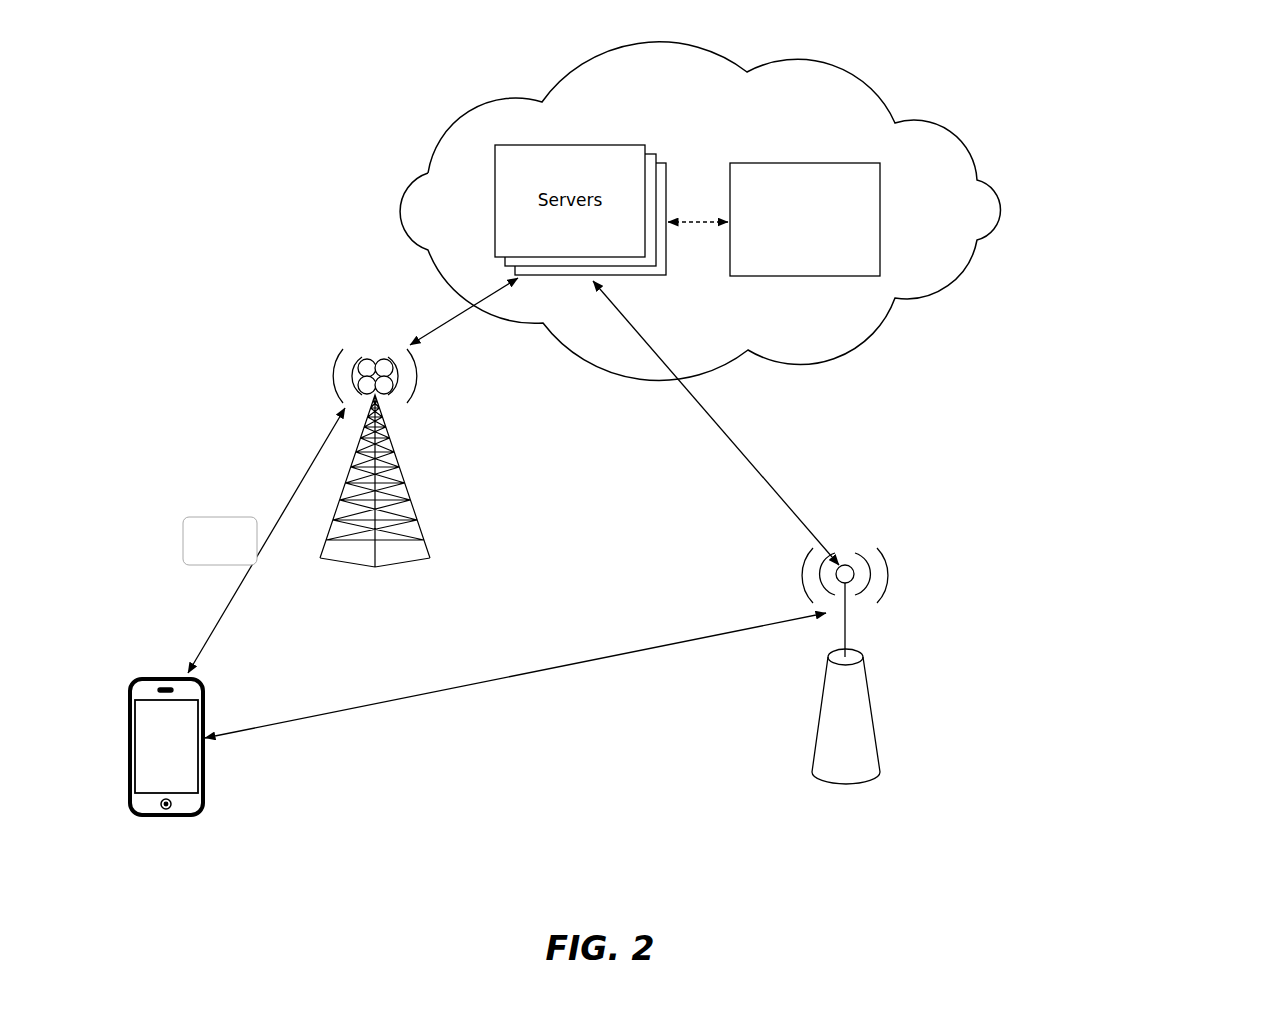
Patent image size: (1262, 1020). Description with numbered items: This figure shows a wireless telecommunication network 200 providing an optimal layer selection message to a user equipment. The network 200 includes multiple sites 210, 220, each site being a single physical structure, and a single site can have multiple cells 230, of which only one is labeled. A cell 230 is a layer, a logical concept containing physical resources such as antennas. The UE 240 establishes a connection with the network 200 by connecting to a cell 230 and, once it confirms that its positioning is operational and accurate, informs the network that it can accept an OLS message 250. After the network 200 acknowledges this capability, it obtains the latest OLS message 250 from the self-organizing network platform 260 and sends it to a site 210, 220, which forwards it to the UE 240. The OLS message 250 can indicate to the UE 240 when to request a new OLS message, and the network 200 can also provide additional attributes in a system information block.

The wireless telecommunication network 200 is at (1182, 103).
The site 210 is at (375, 515).
The site 220 is at (845, 695).
The cell 230 is at (381, 361).
The user equipment 240 is at (166, 782).
The OLS message 250 is at (220, 541).
The self-organizing network platform 260 is at (805, 219).